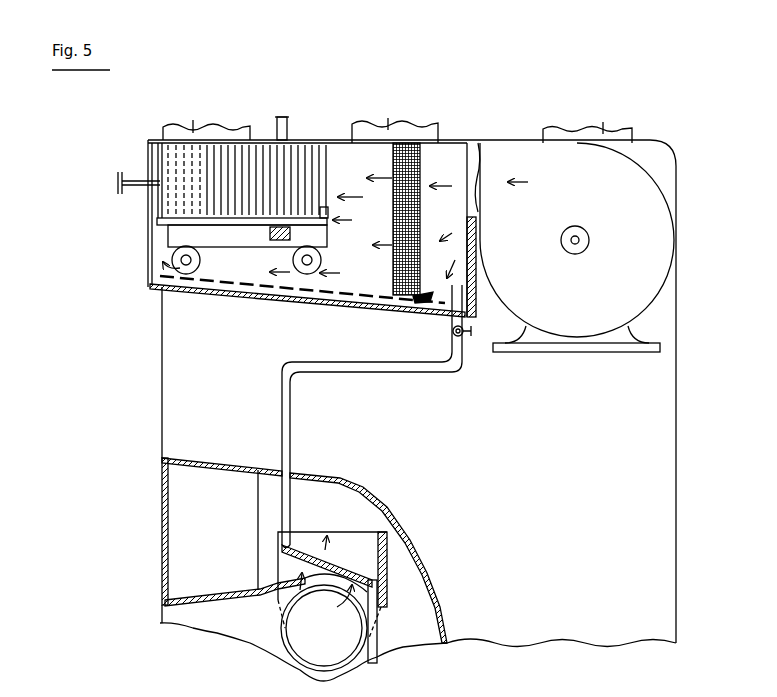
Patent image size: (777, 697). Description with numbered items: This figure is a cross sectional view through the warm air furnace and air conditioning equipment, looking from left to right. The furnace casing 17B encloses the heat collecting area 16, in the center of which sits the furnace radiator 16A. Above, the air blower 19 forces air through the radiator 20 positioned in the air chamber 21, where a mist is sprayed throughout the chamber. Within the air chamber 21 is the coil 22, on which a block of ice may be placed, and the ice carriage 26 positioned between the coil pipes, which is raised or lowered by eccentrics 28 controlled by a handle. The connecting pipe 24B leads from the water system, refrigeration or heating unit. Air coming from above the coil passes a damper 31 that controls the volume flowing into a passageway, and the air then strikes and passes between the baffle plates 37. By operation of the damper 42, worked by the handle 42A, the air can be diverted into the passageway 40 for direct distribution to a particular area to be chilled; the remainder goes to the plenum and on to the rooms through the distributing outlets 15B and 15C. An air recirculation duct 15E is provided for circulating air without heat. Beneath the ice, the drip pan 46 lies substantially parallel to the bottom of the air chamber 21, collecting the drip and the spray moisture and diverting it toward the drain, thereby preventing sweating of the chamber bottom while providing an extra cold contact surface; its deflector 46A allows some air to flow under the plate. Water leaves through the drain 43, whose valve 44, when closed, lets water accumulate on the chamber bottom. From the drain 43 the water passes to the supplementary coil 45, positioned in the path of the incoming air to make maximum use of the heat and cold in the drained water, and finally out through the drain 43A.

The distributing outlet 15B is at (573, 118).
The distributing outlet 15C is at (410, 130).
The air recirculation duct 15E is at (324, 622).
The heat collecting area 16 is at (233, 532).
The furnace radiator 16A is at (368, 558).
The furnace casing 17B is at (162, 497).
The air blower 19 is at (577, 247).
The radiator 20 is at (420, 230).
The air chamber 21 is at (345, 228).
The coil 22 is at (238, 223).
The connecting pipe 24B is at (290, 122).
The ice carriage 26 is at (247, 242).
The eccentrics 28 is at (180, 265).
The damper 31 is at (175, 196).
The baffle plates 37 is at (302, 160).
The passageway 40 is at (170, 128).
The damper 42 is at (200, 183).
The handle 42A is at (118, 185).
The drain 43 is at (457, 374).
The drain 43A is at (372, 660).
The valve 44 is at (464, 335).
The supplementary coil 45 is at (331, 560).
The drip pan 46 is at (323, 293).
The deflector 46A is at (432, 300).